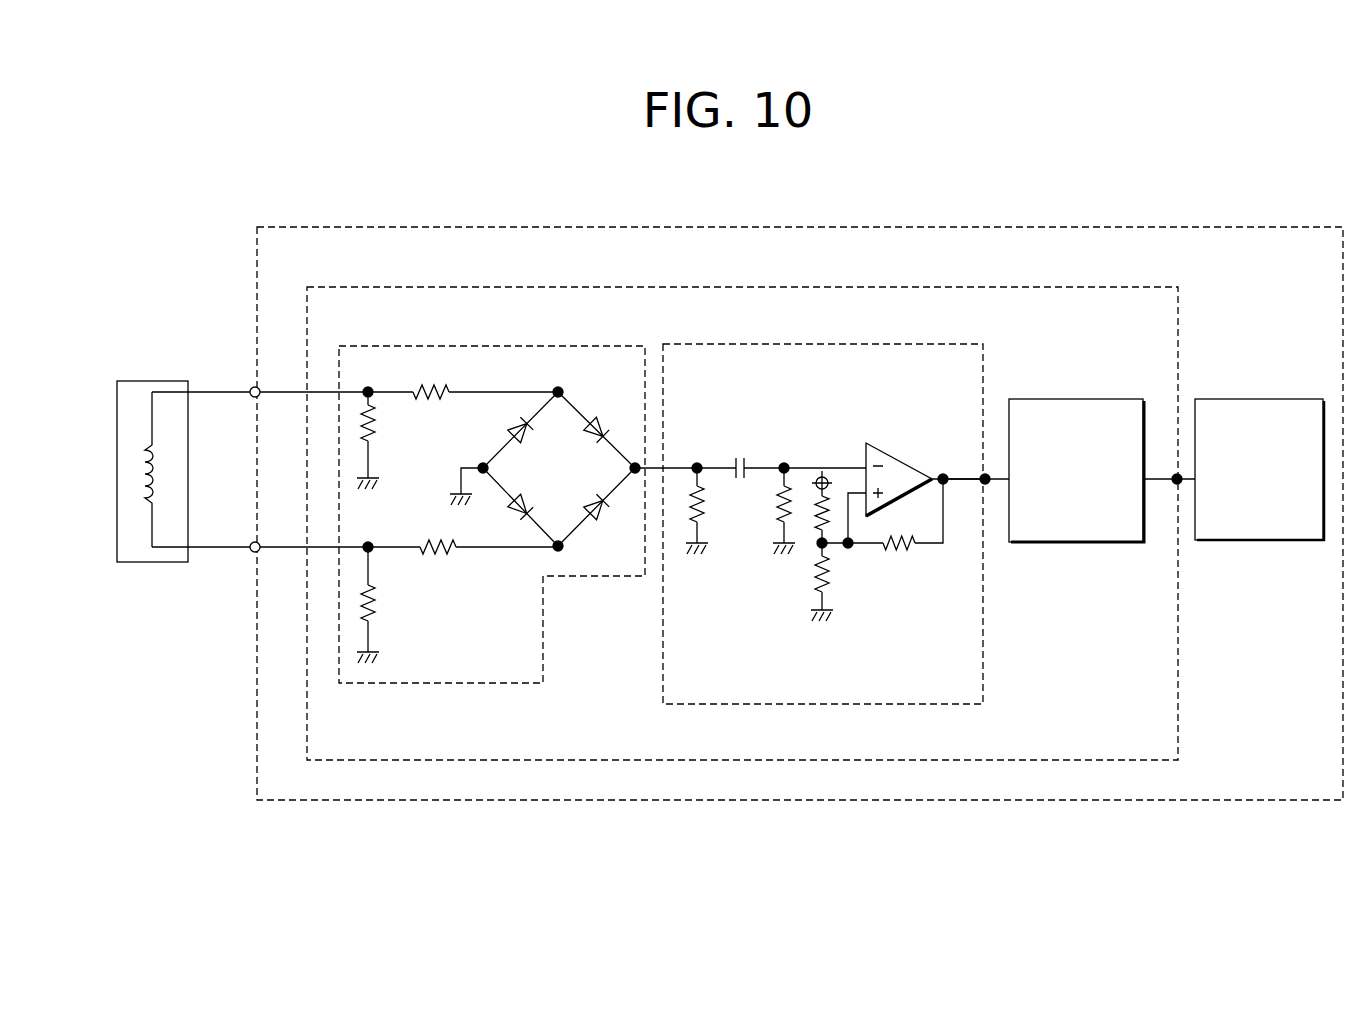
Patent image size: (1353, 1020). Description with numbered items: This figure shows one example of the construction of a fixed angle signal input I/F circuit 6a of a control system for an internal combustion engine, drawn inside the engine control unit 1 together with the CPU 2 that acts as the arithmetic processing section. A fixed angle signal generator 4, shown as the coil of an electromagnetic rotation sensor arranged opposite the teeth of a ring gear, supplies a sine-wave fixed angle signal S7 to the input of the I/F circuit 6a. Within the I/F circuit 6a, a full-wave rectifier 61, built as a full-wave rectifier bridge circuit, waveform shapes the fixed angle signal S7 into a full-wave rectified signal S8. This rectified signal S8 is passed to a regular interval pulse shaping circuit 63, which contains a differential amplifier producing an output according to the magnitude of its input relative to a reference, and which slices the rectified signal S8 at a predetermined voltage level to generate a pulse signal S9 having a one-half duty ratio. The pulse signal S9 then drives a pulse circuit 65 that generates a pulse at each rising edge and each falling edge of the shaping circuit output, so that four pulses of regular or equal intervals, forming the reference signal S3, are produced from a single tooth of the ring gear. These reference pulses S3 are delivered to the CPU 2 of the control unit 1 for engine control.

The internal combustion engine control unit (ECU) 1 is at (893, 226).
The CPU 2 is at (1262, 398).
The fixed angle signal generator 4 is at (123, 380).
The fixed angle signal input I/F circuit 6a is at (562, 286).
The full-wave rectifier 61 is at (591, 345).
The regular interval pulse shaping circuit 63 is at (800, 344).
The pulse circuit 65 is at (1074, 398).
The fixed angle signal S7 is at (205, 391).
The full-wave rectified signal S8 is at (697, 466).
The pulse signal S9 is at (985, 481).
The reference signal pulses S3 is at (1177, 477).